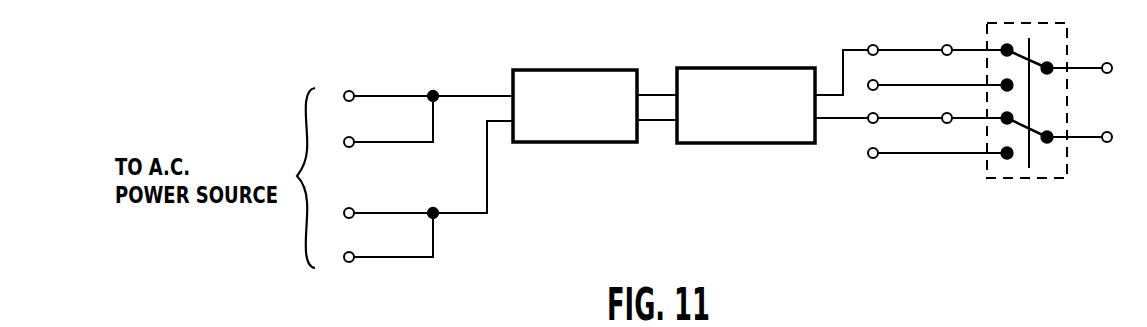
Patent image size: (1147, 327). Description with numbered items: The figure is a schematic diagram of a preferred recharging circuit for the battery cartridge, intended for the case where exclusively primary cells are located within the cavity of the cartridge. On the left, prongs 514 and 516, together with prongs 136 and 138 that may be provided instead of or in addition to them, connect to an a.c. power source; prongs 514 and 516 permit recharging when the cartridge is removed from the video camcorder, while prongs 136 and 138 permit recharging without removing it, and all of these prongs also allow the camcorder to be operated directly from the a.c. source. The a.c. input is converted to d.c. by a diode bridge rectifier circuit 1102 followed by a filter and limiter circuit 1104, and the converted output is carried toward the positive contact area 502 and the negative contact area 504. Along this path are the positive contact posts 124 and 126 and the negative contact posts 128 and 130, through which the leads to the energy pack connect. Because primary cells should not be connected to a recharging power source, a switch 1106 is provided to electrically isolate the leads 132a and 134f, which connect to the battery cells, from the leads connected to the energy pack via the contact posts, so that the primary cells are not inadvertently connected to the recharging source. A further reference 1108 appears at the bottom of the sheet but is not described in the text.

The prong 514 is at (428, 85).
The prong 136 is at (388, 121).
The prong 516 is at (428, 170).
The prong 138 is at (388, 237).
The diode bridge rectifier circuit 1102 is at (607, 70).
The filter and limiter circuit 1104 is at (766, 68).
The positive contact post 124 is at (871, 37).
The positive contact post 126 is at (942, 37).
The lead 132a is at (931, 76).
The negative contact post 128 is at (852, 108).
The negative contact post 130 is at (942, 108).
The lead 134f is at (931, 141).
The switch 1106 is at (996, 22).
The positive contact area 502 is at (1087, 58).
The negative contact area 504 is at (1088, 125).
The reference numeral 1108 is at (940, 326).